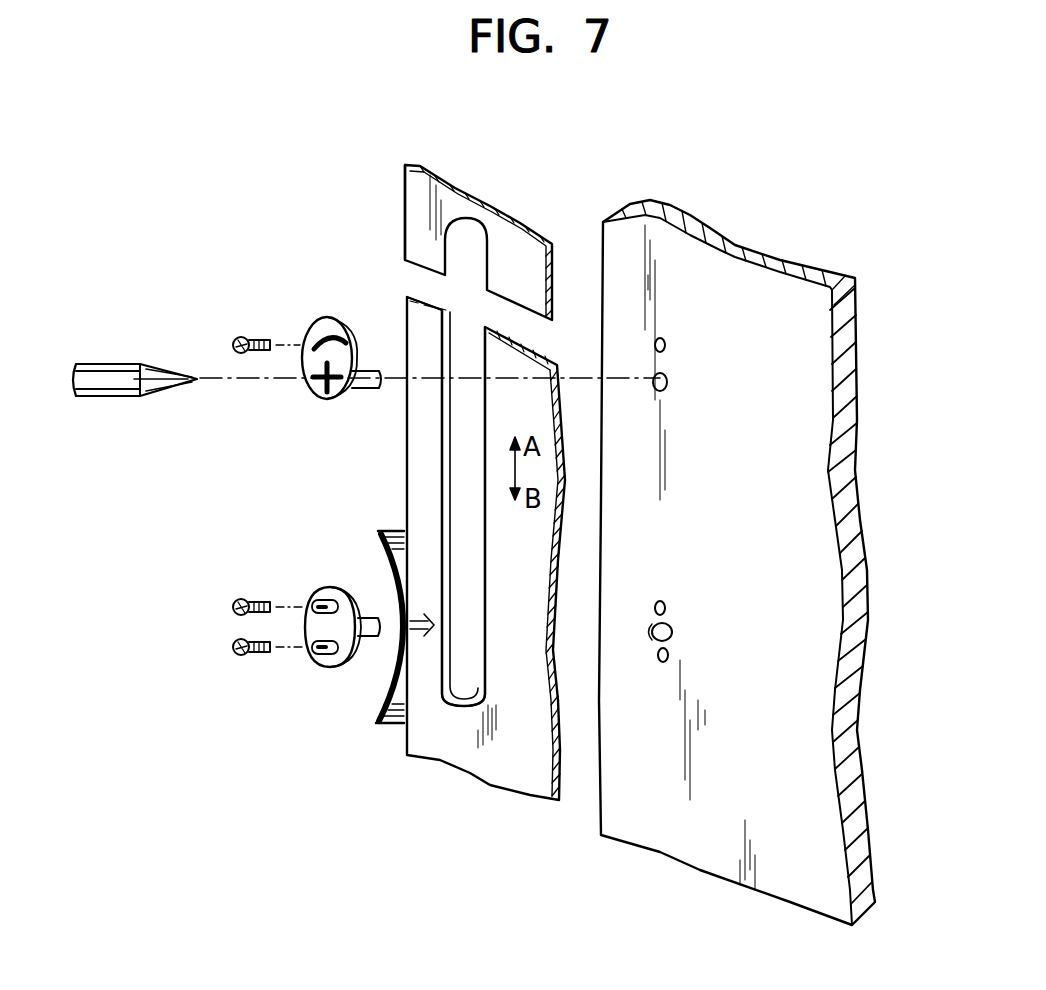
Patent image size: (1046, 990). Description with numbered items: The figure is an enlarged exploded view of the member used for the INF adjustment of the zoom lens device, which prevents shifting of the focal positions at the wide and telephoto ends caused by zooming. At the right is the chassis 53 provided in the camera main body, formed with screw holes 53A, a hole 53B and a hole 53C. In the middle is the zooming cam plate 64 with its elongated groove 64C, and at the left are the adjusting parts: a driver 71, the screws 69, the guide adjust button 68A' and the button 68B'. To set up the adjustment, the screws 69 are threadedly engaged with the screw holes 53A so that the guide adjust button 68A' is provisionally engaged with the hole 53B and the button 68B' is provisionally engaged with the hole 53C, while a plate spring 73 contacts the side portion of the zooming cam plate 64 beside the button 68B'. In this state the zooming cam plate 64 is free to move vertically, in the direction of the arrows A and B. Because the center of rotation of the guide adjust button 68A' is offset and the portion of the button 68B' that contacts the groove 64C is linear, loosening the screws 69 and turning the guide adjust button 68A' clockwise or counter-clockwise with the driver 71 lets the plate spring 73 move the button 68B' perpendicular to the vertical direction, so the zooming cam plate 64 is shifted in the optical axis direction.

The driver 71 is at (110, 362).
The screws 69 is at (240, 336).
The guide adjust button 68A' is at (338, 336).
The button 68B' is at (339, 596).
The zooming cam plate 64 is at (413, 457).
The groove 64C is at (460, 493).
The plate spring 73 is at (380, 712).
The chassis 53 is at (660, 842).
The screw holes 53A is at (668, 343).
The hole 53B is at (668, 385).
The hole 53C is at (652, 632).